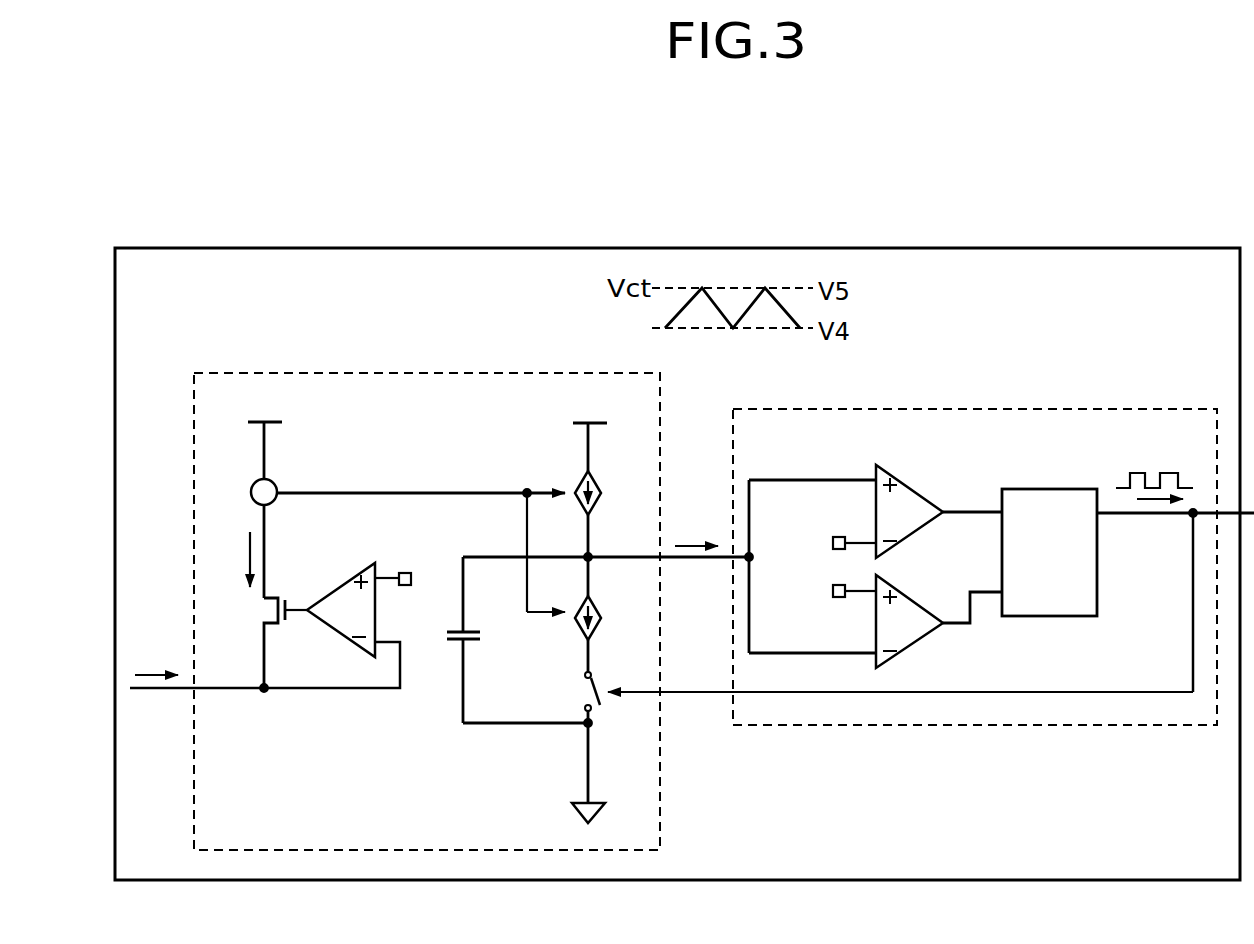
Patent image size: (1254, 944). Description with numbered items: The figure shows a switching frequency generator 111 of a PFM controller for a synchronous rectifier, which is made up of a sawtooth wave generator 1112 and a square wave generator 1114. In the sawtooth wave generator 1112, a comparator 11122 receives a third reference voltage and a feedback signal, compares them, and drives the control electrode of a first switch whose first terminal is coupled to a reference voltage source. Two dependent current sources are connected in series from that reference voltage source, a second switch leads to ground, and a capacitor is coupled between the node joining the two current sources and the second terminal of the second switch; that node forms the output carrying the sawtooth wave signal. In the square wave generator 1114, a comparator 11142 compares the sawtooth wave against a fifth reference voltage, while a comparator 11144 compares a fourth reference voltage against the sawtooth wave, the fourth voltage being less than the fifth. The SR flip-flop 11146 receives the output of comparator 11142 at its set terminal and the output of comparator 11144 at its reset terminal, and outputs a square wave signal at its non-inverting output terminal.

The switching frequency generator 111 is at (287, 246).
The sawtooth wave generator 1112 is at (430, 372).
The square wave generator 1114 is at (973, 408).
The comparator 11122 is at (353, 578).
The comparator 11142 is at (918, 488).
The comparator 11144 is at (915, 646).
The SR flip-flop 11146 is at (1050, 488).